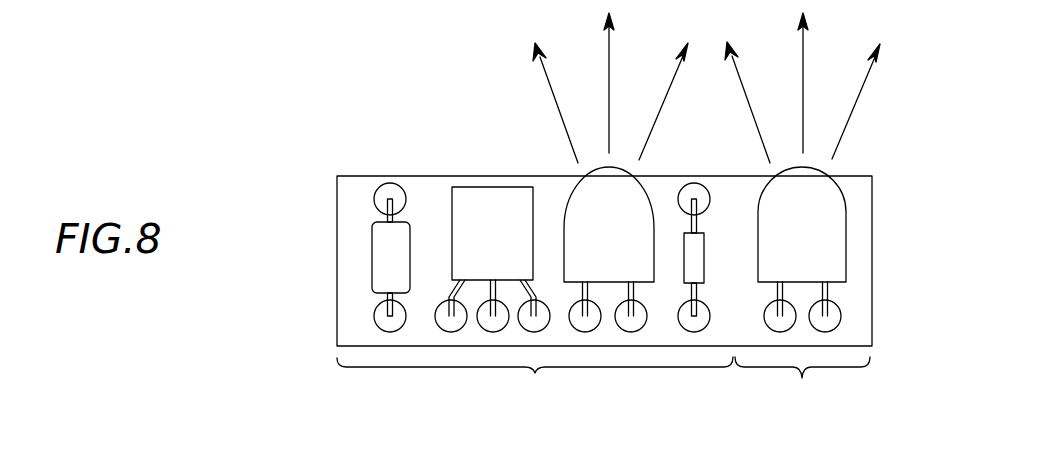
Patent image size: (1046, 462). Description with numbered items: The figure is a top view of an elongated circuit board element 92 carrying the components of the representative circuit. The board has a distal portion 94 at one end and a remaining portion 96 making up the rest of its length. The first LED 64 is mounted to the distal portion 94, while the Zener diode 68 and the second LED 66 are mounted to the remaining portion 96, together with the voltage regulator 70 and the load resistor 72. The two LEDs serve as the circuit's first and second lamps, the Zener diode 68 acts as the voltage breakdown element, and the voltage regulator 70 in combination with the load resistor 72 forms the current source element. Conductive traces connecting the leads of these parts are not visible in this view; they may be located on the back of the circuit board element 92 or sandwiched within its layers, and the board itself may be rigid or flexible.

The circuit board element 92 is at (398, 177).
The load resistor 72 is at (378, 271).
The voltage regulator 70 is at (486, 198).
The second LED 66 is at (592, 193).
The Zener diode 68 is at (697, 250).
The first LED 64 is at (823, 228).
The remaining portion 96 is at (535, 383).
The distal portion 94 is at (802, 382).